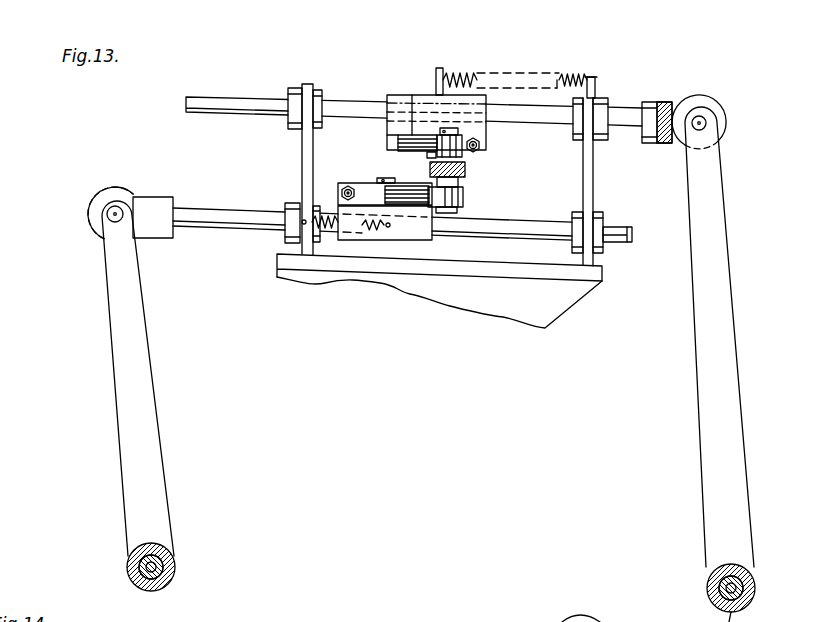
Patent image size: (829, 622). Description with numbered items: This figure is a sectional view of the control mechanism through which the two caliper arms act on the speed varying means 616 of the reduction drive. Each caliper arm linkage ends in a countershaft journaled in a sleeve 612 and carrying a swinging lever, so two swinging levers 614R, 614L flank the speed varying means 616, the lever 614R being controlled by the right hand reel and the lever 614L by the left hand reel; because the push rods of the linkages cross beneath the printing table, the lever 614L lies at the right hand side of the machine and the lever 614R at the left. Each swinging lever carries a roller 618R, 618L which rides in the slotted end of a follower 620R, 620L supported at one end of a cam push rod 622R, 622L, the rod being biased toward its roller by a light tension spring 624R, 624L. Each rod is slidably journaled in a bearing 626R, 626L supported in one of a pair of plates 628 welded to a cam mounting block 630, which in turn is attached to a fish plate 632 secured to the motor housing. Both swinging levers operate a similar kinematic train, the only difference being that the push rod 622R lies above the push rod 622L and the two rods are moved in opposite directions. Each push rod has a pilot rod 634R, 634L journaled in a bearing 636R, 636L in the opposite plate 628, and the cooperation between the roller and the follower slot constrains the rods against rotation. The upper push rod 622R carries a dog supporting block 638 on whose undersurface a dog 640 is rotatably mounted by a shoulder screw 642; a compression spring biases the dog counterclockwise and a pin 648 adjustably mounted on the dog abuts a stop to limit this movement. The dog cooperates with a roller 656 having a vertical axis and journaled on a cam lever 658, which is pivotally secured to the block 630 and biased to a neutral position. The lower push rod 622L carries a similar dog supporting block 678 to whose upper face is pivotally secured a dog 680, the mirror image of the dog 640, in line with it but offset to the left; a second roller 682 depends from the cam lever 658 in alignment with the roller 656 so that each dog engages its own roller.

The sleeve 612 is at (720, 587).
The swinging lever 614L is at (118, 421).
The swinging lever 614R is at (726, 412).
The speed varying means 616 is at (423, 62).
The roller 618L is at (97, 206).
The roller 618R is at (721, 119).
The follower 620L is at (161, 199).
The follower 620R is at (656, 102).
The cam push rod 622L is at (232, 229).
The cam push rod 622R is at (547, 124).
The tension spring 624L is at (330, 233).
The tension spring 624R is at (566, 73).
The bearing 626L is at (286, 203).
The bearing 626R is at (607, 99).
The plates 628 is at (305, 152).
The cam mounting block 630 is at (602, 275).
The fish plate 632 is at (555, 300).
The pilot rod 634L is at (550, 222).
The pilot rod 634R is at (352, 101).
The bearing 636L is at (603, 250).
The bearing 636R is at (297, 88).
The dog supporting block 638 is at (480, 100).
The dog 640 is at (413, 136).
The shoulder screw 642 is at (431, 157).
The pin 648 is at (478, 143).
The roller 656 is at (452, 133).
The cam lever 658 is at (467, 172).
The dog supporting block 678 is at (427, 240).
The dog 680 is at (385, 223).
The second roller 682 is at (463, 200).